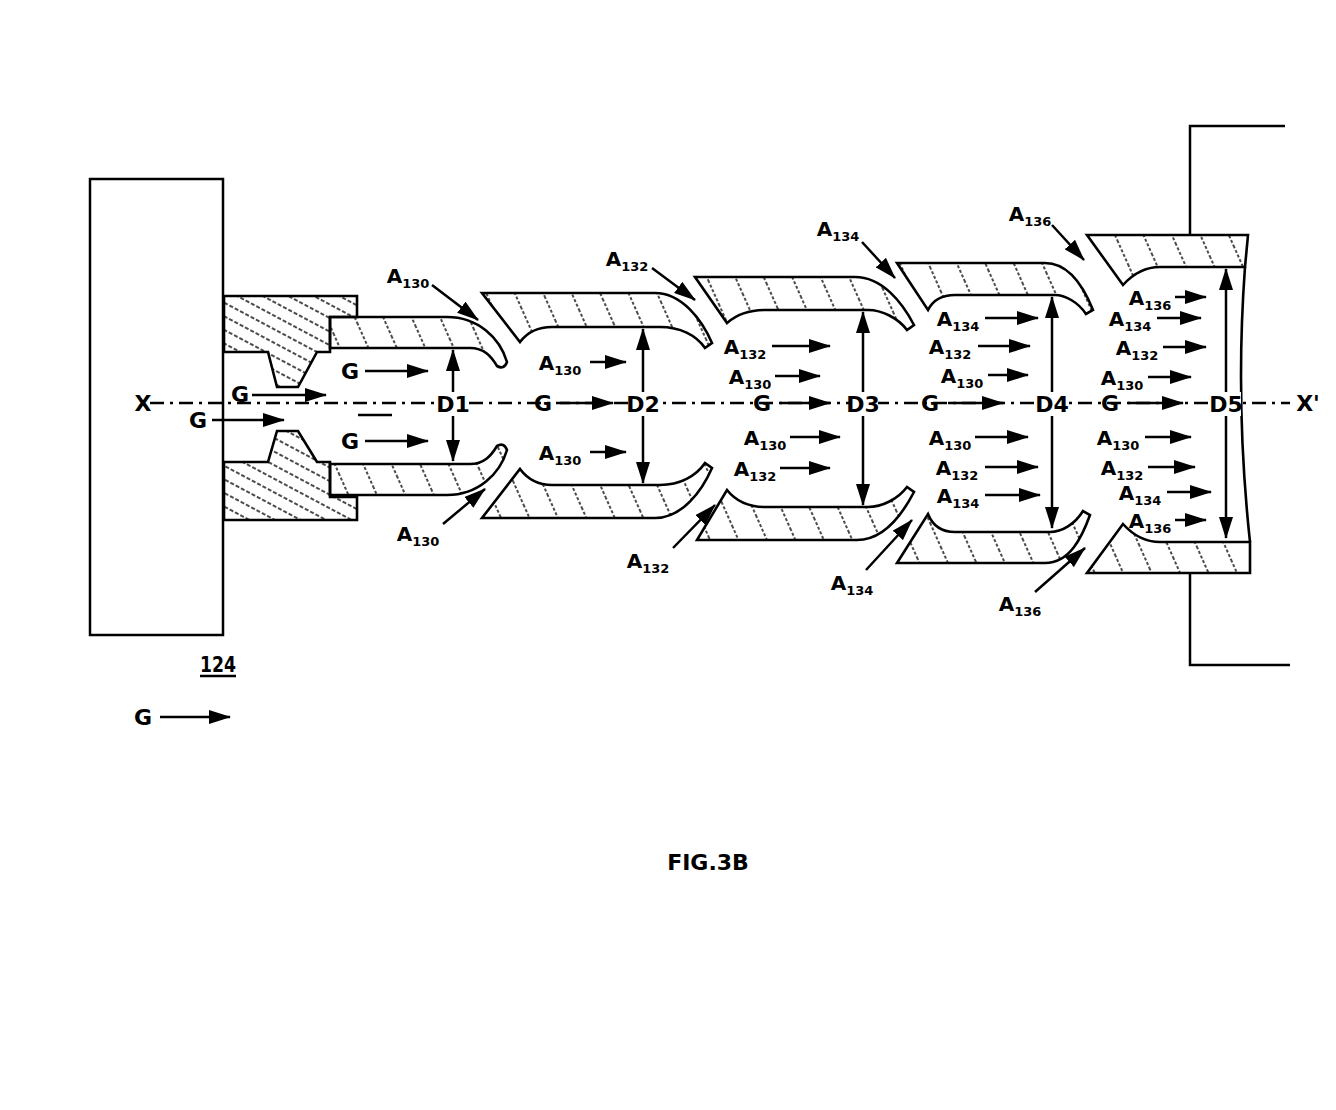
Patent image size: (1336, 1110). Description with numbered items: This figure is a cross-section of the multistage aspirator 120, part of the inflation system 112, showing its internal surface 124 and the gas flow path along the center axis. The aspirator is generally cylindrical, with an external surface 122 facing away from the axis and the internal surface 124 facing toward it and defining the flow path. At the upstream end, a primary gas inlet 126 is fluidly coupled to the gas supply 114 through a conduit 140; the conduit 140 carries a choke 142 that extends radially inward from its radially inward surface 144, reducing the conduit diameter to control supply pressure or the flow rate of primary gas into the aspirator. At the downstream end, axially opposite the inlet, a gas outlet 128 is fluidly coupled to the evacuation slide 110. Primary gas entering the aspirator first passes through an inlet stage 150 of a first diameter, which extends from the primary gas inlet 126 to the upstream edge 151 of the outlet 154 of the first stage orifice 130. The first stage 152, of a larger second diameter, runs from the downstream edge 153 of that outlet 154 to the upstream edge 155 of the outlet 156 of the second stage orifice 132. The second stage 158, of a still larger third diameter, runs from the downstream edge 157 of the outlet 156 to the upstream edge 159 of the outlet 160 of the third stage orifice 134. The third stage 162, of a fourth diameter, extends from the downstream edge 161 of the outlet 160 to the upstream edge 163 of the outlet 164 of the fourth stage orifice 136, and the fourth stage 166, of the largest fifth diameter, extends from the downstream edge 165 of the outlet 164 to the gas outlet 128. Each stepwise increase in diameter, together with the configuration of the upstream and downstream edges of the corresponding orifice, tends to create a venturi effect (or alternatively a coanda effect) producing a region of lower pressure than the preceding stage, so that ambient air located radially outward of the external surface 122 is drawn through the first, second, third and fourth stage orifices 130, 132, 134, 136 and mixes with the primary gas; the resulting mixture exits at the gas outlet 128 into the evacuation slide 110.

The evacuation slide 110 is at (1222, 140).
The inflation system 112 is at (316, 141).
The gas supply 114 is at (176, 198).
The multistage aspirator 120 is at (621, 148).
The external surface 122 is at (1176, 234).
The internal surface 124 is at (375, 403).
The primary gas inlet 126 is at (331, 487).
The gas outlet 128 is at (1252, 250).
The first stage orifice 130 is at (502, 330).
The second stage orifice 132 is at (722, 303).
The third stage orifice 134 is at (913, 288).
The fourth stage orifice 136 is at (1095, 260).
The conduit 140 is at (280, 316).
The choke 142 is at (288, 443).
The radially inward surface 144 is at (237, 353).
The inlet stage 150 is at (330, 632).
The upstream edge 151 is at (513, 366).
The first stage 152 is at (518, 655).
The downstream edge 153 is at (524, 345).
The outlet 154 is at (517, 459).
The upstream edge 155 is at (717, 346).
The outlet 156 is at (722, 470).
The downstream edge 157 is at (748, 324).
The second stage 158 is at (732, 674).
The upstream edge 159 is at (917, 328).
The outlet 160 is at (924, 494).
The downstream edge 161 is at (948, 303).
The third stage 162 is at (925, 697).
The upstream edge 163 is at (1095, 313).
The outlet 164 is at (1112, 515).
The downstream edge 165 is at (1140, 273).
The fourth stage 166 is at (1120, 710).